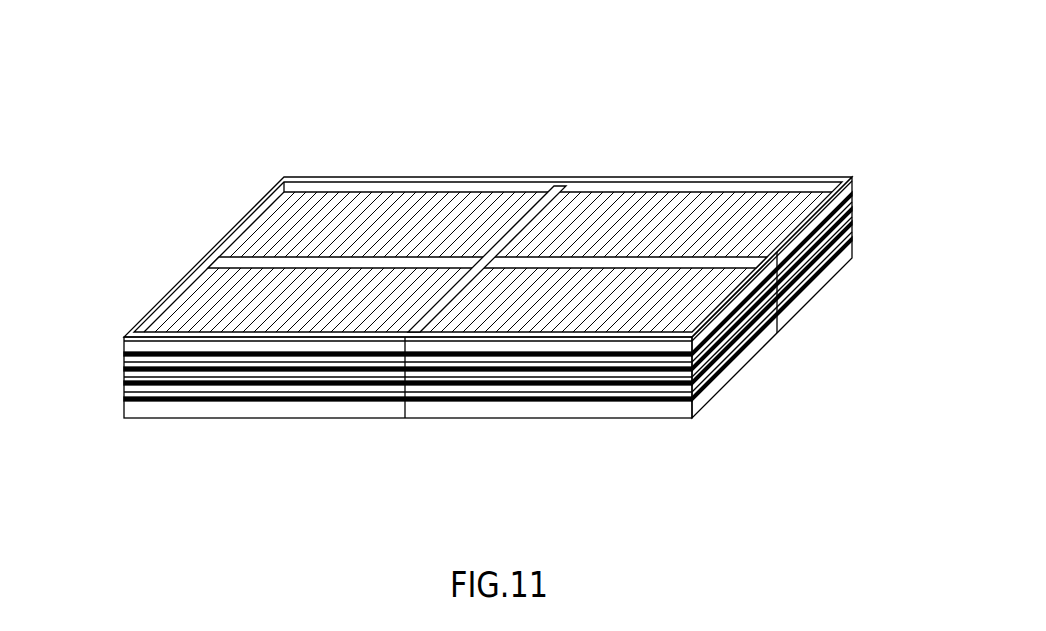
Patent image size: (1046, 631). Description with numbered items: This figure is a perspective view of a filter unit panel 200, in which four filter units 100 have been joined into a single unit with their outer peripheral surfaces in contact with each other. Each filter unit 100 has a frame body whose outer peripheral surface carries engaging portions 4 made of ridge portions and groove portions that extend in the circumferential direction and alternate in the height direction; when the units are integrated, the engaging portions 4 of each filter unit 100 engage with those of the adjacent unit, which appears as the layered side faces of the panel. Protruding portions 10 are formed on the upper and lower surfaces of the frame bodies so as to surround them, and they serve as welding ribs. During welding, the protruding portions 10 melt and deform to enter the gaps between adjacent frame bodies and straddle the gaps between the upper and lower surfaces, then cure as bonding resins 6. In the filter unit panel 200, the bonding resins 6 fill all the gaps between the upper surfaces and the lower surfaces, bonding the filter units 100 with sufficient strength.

The filter unit panel 200 is at (470, 255).
The filter unit 100 is at (318, 297).
The bonding resin 6 is at (600, 258).
The protruding portion 10 is at (138, 330).
The engaging portion 4 is at (778, 279).